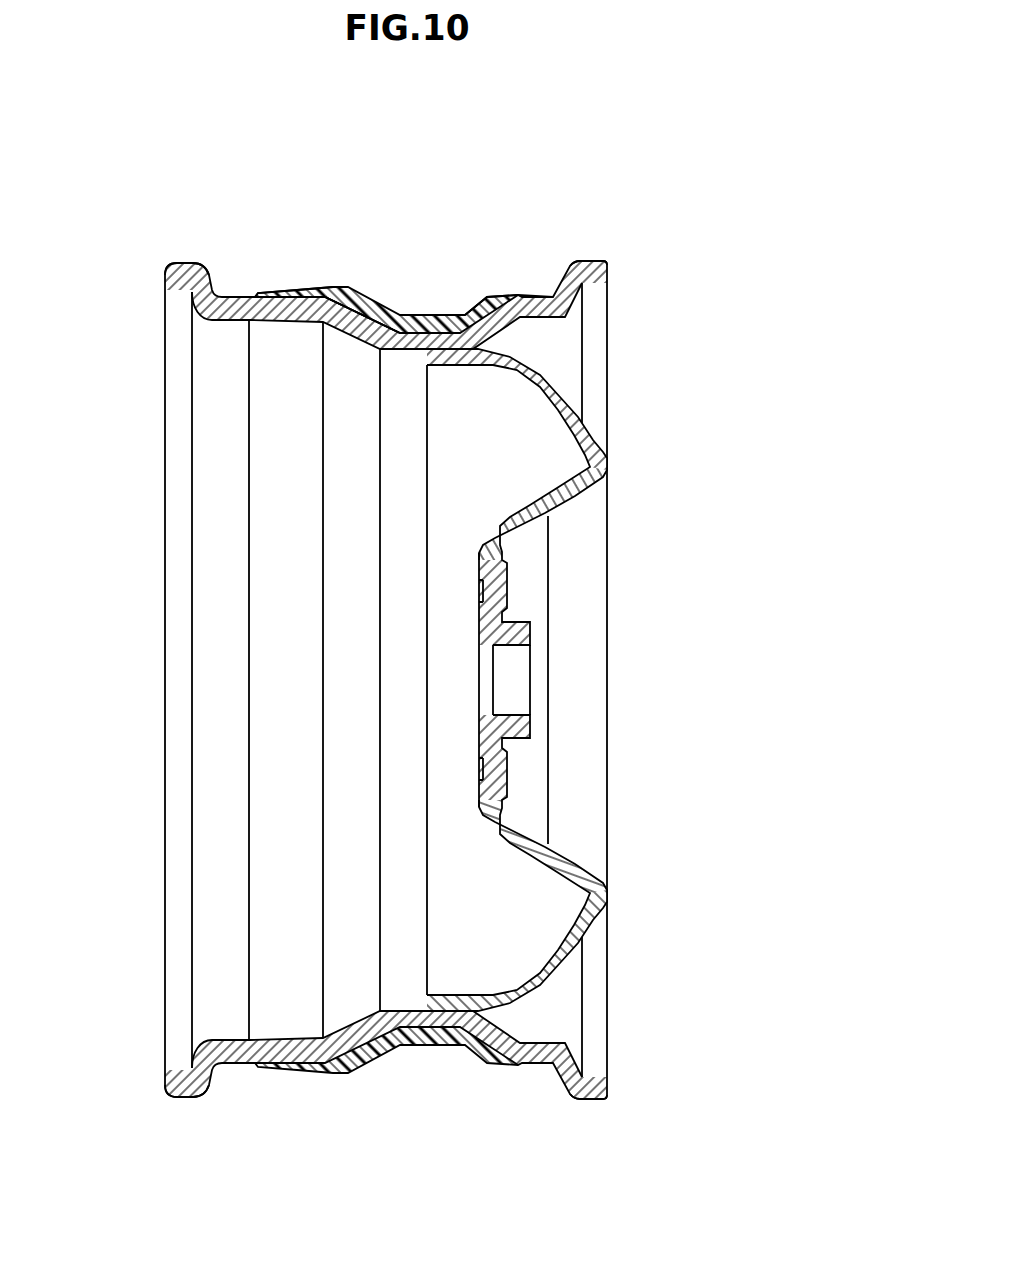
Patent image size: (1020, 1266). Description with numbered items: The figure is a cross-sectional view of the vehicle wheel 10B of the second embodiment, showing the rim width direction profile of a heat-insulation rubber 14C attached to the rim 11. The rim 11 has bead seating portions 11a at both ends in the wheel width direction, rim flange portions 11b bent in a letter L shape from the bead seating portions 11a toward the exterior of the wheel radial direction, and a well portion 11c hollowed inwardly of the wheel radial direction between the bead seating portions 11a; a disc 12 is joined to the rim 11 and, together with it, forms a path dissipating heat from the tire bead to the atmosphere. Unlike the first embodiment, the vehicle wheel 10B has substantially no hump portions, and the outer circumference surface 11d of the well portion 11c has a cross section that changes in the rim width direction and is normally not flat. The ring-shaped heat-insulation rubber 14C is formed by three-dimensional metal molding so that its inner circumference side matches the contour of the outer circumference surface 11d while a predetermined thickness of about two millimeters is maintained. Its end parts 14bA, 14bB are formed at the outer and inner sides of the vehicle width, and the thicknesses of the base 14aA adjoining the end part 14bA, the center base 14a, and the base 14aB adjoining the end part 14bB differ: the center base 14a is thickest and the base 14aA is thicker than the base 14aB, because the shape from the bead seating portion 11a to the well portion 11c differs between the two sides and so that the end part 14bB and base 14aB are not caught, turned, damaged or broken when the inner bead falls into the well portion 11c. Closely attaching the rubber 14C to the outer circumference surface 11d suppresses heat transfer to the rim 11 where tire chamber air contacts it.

The vehicle wheel 10B is at (641, 678).
The rim 11 is at (345, 339).
The bead seating portion 11a is at (230, 294).
The rim flange portion 11b is at (172, 263).
The well portion 11c is at (321, 215).
The outer circumference surface 11d is at (376, 311).
The disc 12 is at (567, 505).
The center base 14a is at (402, 316).
The base 14aA is at (507, 282).
The base 14aB is at (354, 282).
The end part 14bA is at (509, 291).
The end part 14bB is at (262, 297).
The heat-insulation rubber 14C is at (438, 314).